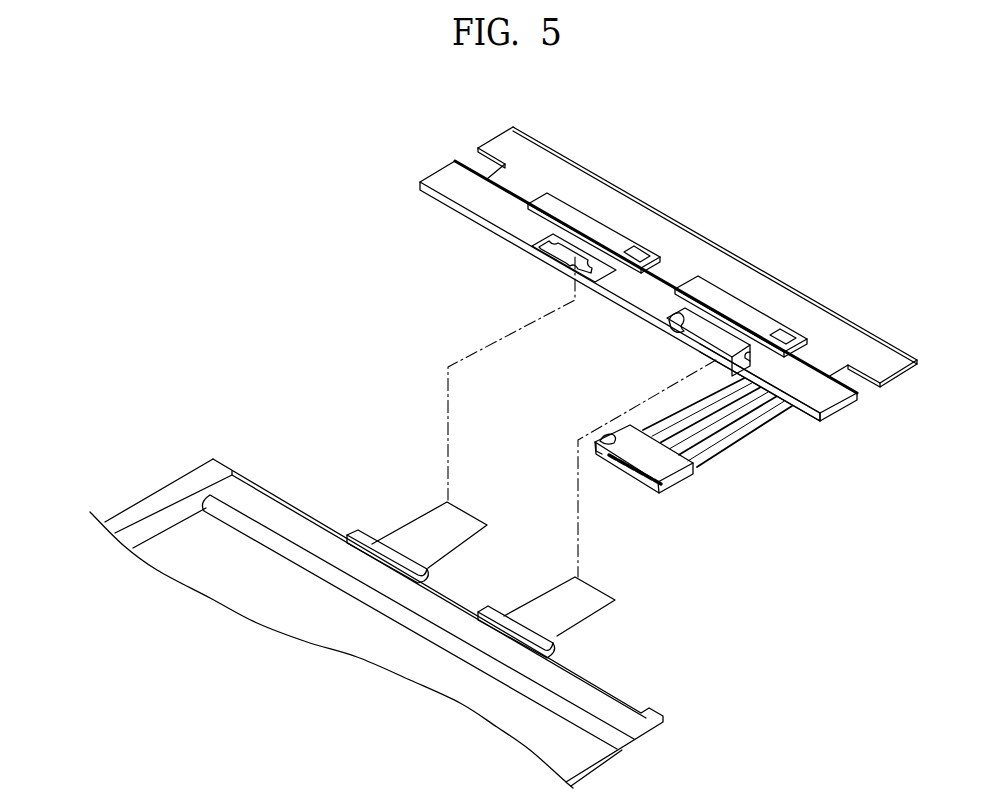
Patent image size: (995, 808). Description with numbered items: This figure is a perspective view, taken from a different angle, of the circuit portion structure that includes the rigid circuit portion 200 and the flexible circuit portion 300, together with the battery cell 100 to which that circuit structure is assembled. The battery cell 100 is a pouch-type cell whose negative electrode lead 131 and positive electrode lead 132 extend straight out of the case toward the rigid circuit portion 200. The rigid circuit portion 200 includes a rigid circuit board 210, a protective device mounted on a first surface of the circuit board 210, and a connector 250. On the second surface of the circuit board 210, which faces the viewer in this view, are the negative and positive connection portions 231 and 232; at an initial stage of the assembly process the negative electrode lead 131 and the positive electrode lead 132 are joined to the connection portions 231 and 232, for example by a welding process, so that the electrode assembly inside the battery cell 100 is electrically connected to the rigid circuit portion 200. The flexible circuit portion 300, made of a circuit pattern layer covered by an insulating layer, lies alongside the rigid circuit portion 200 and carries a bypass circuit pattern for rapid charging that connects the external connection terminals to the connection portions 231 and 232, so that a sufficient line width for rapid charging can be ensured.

The battery cell 100 is at (168, 473).
The negative electrode lead 131 is at (597, 597).
The positive electrode lead 132 is at (412, 530).
The rigid circuit portion 200 is at (418, 170).
The circuit board 210 is at (820, 421).
The negative connection portion 231 is at (684, 321).
The positive connection portion 232 is at (564, 254).
The connector 250 is at (667, 468).
The flexible circuit portion 300 is at (497, 136).